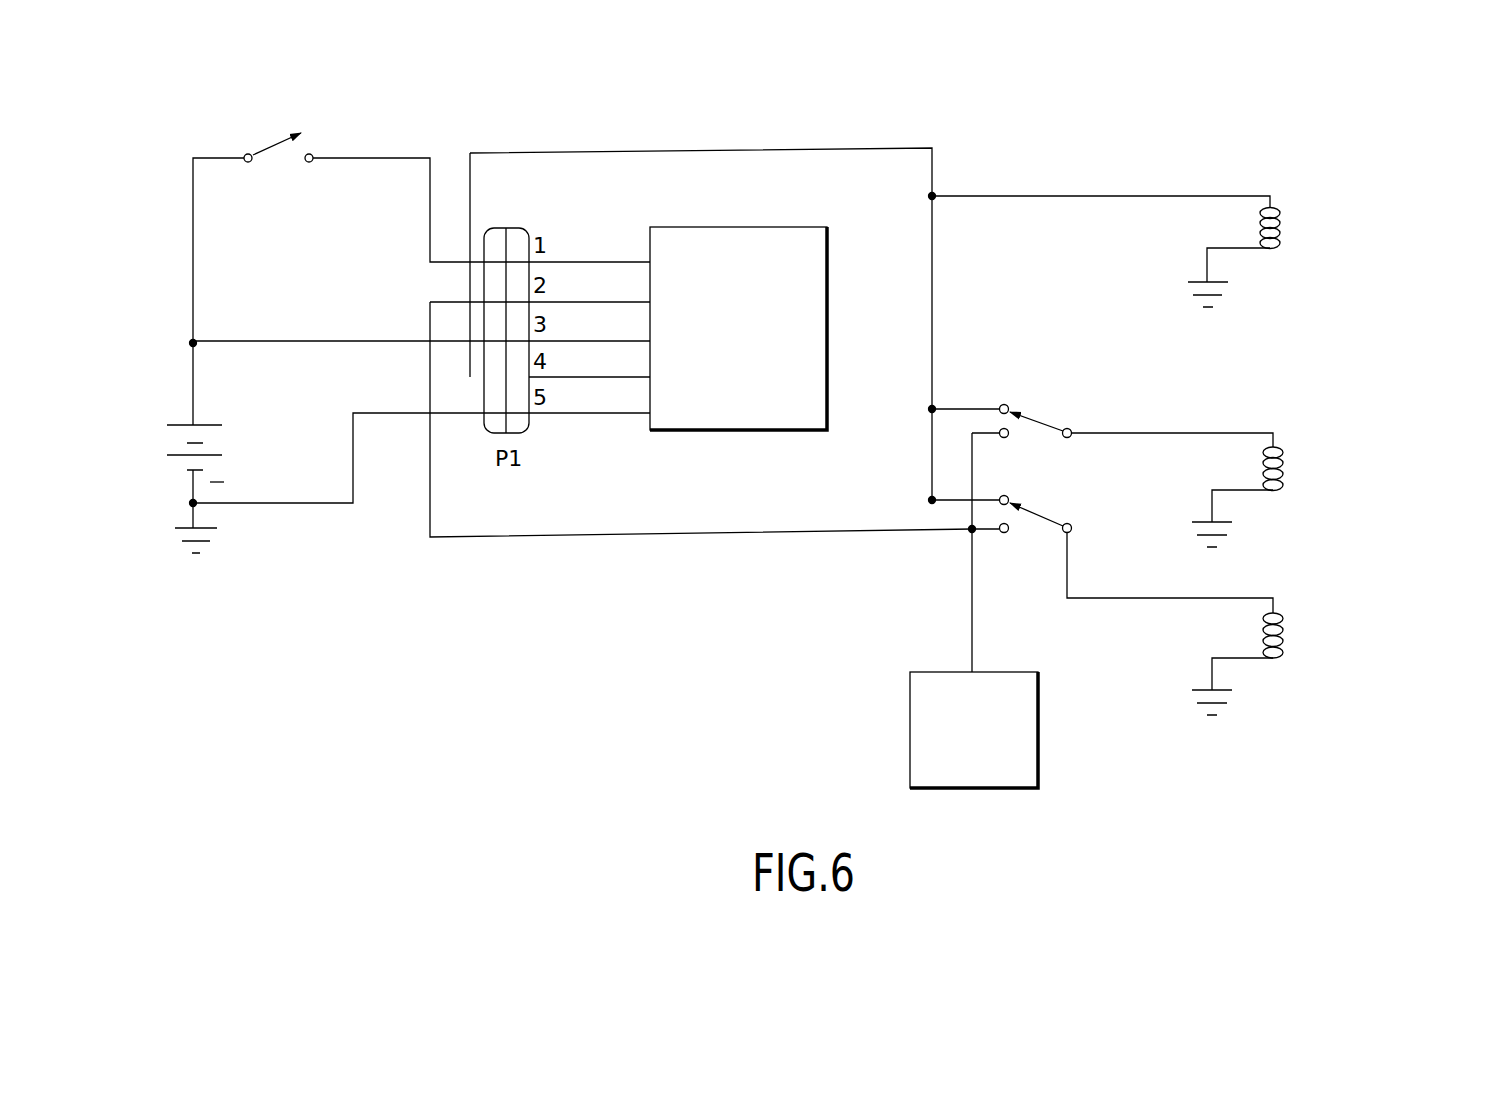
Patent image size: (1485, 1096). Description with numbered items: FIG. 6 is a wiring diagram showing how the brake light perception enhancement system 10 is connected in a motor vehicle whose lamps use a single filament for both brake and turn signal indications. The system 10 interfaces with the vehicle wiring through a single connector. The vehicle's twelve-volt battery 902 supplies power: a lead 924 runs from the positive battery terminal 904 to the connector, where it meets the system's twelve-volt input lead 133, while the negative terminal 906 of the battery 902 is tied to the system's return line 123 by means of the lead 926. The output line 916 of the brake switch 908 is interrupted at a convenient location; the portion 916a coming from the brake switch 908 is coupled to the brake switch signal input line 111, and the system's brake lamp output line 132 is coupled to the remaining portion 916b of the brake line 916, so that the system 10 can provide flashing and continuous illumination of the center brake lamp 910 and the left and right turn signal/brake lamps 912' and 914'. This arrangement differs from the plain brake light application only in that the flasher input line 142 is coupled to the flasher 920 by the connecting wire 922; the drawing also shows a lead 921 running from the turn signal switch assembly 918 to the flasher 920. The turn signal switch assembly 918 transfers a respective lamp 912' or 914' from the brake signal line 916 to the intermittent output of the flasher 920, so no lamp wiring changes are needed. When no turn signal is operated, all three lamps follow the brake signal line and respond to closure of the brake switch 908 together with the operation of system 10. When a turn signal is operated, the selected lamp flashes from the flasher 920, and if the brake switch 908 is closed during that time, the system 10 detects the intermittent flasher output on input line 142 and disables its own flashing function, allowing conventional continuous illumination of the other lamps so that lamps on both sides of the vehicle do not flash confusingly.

The brake light perception enhancement system 10 is at (750, 407).
The brake switch signal input line 111 is at (640, 262).
The flasher input line 142 is at (640, 302).
The 12-volt input lead 133 is at (640, 341).
The brake lamp output line 132 is at (640, 377).
The return line 123 is at (640, 413).
The 12-volt battery 902 is at (178, 424).
The positive battery terminal 904 is at (188, 343).
The negative terminal 906 is at (190, 503).
The brake switch 908 is at (266, 162).
The center brake lamp 910 is at (1276, 203).
The left turn signal/brake lamp 912' is at (1266, 471).
The right turn signal/brake lamp 914' is at (1264, 623).
The brake signal line 916 is at (557, 130).
The portion of brake line from switch 916a is at (346, 157).
The portion of brake line to lamps 916b is at (680, 152).
The turn signal switch assembly 918 is at (1040, 404).
The flasher 920 is at (1040, 725).
The flasher lead 921 is at (972, 648).
The connecting wire 922 is at (618, 538).
The lead 924 is at (293, 341).
The lead 926 is at (296, 503).